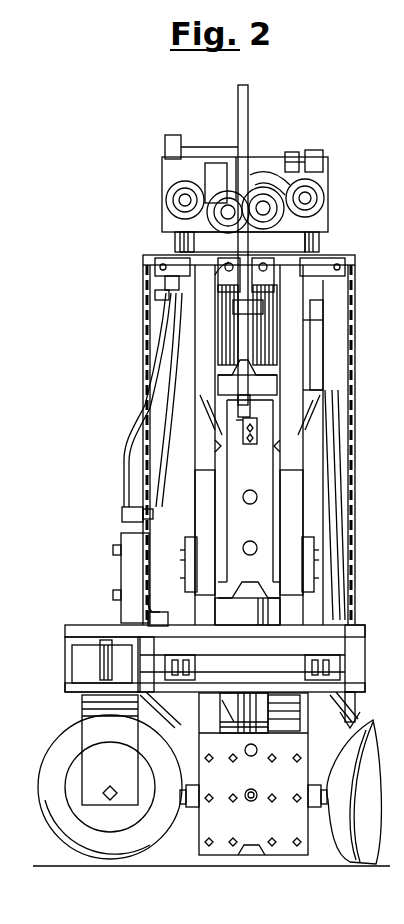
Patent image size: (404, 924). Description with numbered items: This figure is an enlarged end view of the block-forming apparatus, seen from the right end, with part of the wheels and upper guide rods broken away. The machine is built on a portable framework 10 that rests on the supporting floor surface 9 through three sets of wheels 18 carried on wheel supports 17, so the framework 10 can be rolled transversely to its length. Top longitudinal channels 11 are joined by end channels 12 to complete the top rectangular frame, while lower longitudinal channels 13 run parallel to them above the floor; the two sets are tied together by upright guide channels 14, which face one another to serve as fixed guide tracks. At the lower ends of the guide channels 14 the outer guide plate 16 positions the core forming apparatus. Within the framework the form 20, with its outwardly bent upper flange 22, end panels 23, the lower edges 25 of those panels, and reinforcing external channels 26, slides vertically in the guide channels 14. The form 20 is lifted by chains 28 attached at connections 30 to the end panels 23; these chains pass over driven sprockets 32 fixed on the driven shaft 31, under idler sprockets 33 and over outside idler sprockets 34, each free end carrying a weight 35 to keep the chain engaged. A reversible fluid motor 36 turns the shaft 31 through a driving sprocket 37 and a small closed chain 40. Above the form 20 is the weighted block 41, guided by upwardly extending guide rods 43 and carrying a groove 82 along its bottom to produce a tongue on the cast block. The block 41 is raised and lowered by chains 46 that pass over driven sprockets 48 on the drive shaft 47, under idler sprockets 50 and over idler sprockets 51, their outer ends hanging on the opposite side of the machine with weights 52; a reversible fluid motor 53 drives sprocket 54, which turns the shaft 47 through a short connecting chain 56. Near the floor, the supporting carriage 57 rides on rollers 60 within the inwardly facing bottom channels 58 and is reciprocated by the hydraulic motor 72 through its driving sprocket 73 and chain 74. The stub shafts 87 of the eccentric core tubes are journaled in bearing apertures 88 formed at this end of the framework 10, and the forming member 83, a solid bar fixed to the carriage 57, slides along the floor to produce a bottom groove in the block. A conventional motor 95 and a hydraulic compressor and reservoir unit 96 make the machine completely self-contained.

The supporting floor surface 9 is at (185, 848).
The framework 10 is at (305, 338).
The top longitudinal channels 11 is at (178, 242).
The end channels 12 is at (263, 224).
The lower longitudinal channels 13 is at (180, 688).
The upright guide channels 14 is at (259, 424).
The outer guide plate 16 is at (261, 822).
The wheel supports 17 is at (80, 718).
The wheels 18 is at (117, 846).
The form 20 is at (249, 594).
The upper flange 22 is at (178, 410).
The end panels 23 is at (250, 491).
The lower edges of the end panels 25 is at (247, 611).
The external channels 26 is at (200, 548).
The chains 28 is at (152, 300).
The chain connections 30 is at (253, 445).
The driven shaft 31 is at (228, 222).
The driven sprockets 32 is at (218, 226).
The idler sprockets 33 is at (226, 278).
The outside idler sprockets 34 is at (150, 267).
The weight 35 is at (150, 615).
The reversible fluid motor 36 is at (166, 190).
The driving sprocket 37 is at (172, 203).
The closed chain 40 is at (185, 190).
The weighted block 41 is at (270, 345).
The guide rods 43 is at (250, 112).
The chains 46 is at (357, 305).
The drive shaft 47 is at (269, 220).
The driven sprockets 48 is at (278, 186).
The idler sprockets 50 is at (268, 278).
The idler sprockets 51 is at (352, 258).
The weights 52 is at (362, 722).
The reversible fluid motor 53 is at (320, 190).
The sprocket 54 is at (318, 200).
The connecting chain 56 is at (323, 160).
The supporting carriage 57 is at (222, 703).
The bottom channels 58 is at (188, 810).
The rollers 60 is at (192, 785).
The hydraulic motor 72 is at (280, 700).
The driving sprocket 73 is at (222, 722).
The chain 74 is at (250, 692).
The groove 82 is at (247, 377).
The forming member 83 is at (250, 858).
The stub shaft 87 is at (246, 781).
The bearing apertures 88 is at (257, 748).
The motor 95 is at (312, 345).
The hydraulic compressor and reservoir unit 96 is at (131, 578).